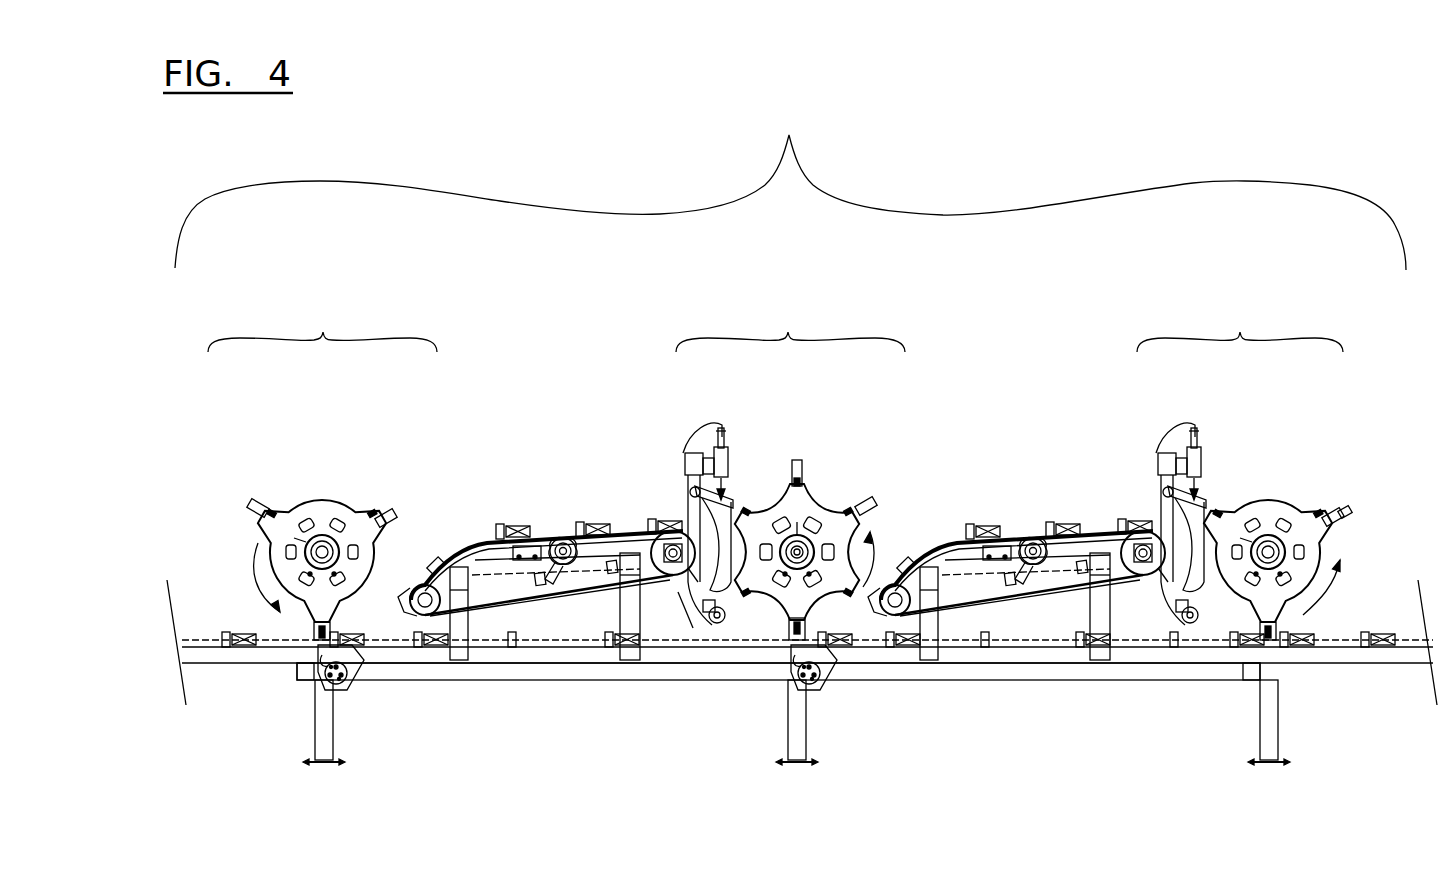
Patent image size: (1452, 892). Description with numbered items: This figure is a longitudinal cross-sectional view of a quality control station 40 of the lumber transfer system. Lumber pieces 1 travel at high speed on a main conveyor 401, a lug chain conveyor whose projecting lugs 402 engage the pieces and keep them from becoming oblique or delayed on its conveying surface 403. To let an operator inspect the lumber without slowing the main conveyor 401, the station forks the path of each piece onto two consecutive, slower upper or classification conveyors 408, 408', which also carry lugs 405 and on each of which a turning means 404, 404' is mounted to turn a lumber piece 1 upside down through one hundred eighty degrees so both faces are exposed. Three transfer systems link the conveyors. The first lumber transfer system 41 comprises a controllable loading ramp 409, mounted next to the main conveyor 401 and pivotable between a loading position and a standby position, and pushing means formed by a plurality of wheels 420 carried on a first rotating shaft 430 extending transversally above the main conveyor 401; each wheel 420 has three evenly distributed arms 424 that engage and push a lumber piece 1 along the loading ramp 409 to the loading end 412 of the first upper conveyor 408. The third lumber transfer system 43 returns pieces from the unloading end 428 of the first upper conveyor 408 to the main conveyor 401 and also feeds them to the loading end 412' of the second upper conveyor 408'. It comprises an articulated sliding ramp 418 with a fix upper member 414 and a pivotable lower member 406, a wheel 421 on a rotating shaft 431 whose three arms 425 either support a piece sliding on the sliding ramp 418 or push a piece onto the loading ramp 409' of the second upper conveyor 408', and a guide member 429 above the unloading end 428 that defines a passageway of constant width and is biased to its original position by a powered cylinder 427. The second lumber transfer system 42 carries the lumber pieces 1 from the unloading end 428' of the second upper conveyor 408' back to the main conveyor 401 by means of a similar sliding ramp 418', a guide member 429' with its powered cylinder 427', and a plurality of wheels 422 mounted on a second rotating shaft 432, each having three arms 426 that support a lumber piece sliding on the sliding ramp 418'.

The lumber piece 1 is at (1377, 630).
The quality control station 40 is at (790, 186).
The first lumber transfer system 41 is at (322, 325).
The second lumber transfer system 42 is at (1240, 326).
The third lumber transfer system 43 is at (790, 325).
The main conveyor 401 is at (228, 655).
The lugs 402 is at (233, 632).
The conveying surface 403 is at (197, 630).
The turning means 404 is at (574, 507).
The turning means 404' is at (1051, 514).
The lugs 405 is at (668, 532).
The pivotable lower member 406 is at (760, 655).
The first upper conveyor 408 is at (547, 569).
The second upper conveyor 408' is at (1024, 542).
The loading ramp 409 is at (369, 702).
The loading ramp 409' is at (844, 702).
The loading end 412 is at (442, 541).
The loading end 412' is at (908, 554).
The fix upper member 414 is at (690, 636).
The sliding ramp 418 is at (648, 681).
The sliding ramp 418' is at (1133, 673).
The wheels 420 is at (318, 500).
The wheel 421 is at (845, 505).
The wheels 422 is at (1272, 500).
The arm 424 is at (257, 506).
The arms 425 is at (870, 508).
The arms 426 is at (1343, 517).
The powered cylinder 427 is at (735, 424).
The powered cylinder 427' is at (1206, 422).
The unloading end 428 is at (689, 511).
The transfer unit 428' is at (1181, 524).
The guide member 429 is at (765, 480).
The guide member 429' is at (1234, 500).
The first rotating shaft 430 is at (333, 540).
The rotating shaft 431 is at (797, 540).
The second rotating shaft 432 is at (1330, 515).